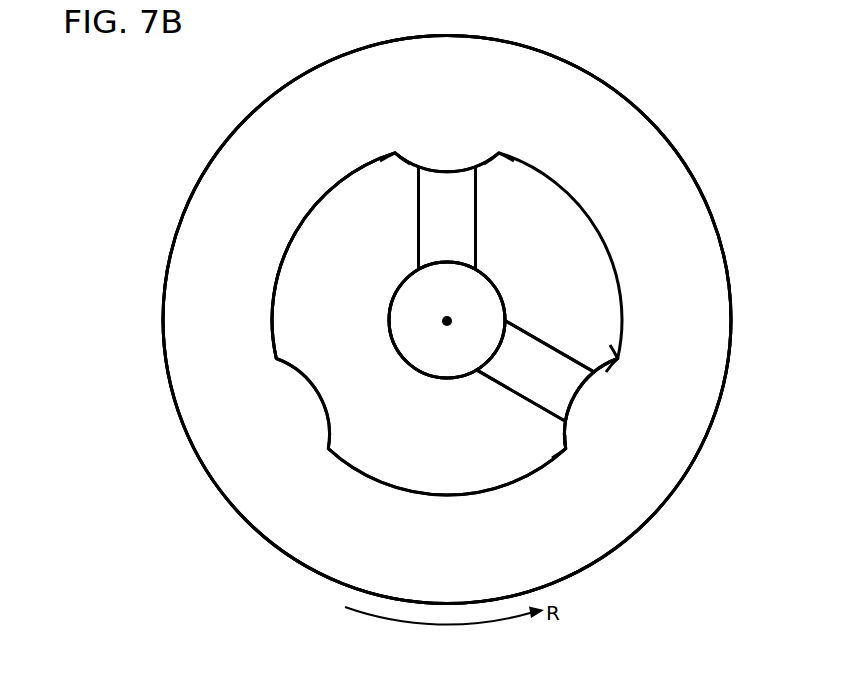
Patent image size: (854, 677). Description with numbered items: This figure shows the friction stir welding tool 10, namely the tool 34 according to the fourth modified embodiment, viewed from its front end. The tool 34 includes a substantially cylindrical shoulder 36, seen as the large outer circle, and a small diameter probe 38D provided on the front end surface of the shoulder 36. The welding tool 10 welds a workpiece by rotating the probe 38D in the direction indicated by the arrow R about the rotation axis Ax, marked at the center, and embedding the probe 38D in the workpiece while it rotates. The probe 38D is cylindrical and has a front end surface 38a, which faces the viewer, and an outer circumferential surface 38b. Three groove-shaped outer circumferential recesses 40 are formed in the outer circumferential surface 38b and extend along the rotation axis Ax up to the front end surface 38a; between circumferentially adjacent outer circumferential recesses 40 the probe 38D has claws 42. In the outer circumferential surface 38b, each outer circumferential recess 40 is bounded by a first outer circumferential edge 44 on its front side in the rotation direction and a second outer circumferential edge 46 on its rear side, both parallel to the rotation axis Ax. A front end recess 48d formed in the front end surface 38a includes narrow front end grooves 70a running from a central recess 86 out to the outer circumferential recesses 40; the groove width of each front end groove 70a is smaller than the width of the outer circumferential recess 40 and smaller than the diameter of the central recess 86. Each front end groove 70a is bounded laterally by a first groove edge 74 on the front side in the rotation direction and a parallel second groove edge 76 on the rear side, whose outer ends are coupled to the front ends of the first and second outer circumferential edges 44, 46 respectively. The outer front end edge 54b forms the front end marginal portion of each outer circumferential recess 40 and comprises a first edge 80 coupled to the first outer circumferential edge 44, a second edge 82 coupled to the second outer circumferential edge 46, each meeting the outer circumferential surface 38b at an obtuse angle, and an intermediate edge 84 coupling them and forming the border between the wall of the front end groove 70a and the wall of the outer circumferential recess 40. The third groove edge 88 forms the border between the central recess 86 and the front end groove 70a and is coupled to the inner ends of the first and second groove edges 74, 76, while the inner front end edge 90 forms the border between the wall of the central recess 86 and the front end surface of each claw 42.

The welding tool 10 is at (111, 85).
The tool 34 is at (149, 85).
The shoulder 36 is at (632, 123).
The probe 38D is at (608, 232).
The front end surface 38a is at (335, 218).
The outer circumferential surface 38b is at (385, 486).
The outer circumferential recess 40 is at (444, 165).
The claw 42 is at (278, 263).
The first outer circumferential edge 44 is at (397, 152).
The second outer circumferential edge 46 is at (497, 152).
The front end recess 48d is at (462, 208).
The outer front end edge 54b is at (658, 467).
The front end groove 70a is at (503, 372).
The first groove edge 74 is at (543, 340).
The second groove edge 76 is at (520, 397).
The first edge 80 is at (607, 369).
The second edge 82 is at (566, 436).
The intermediate edge 84 is at (572, 403).
The central recess 86 is at (397, 292).
The third groove edge 88 is at (440, 262).
The inner front end edge 90 is at (495, 287).
The rotation axis Ax is at (448, 335).